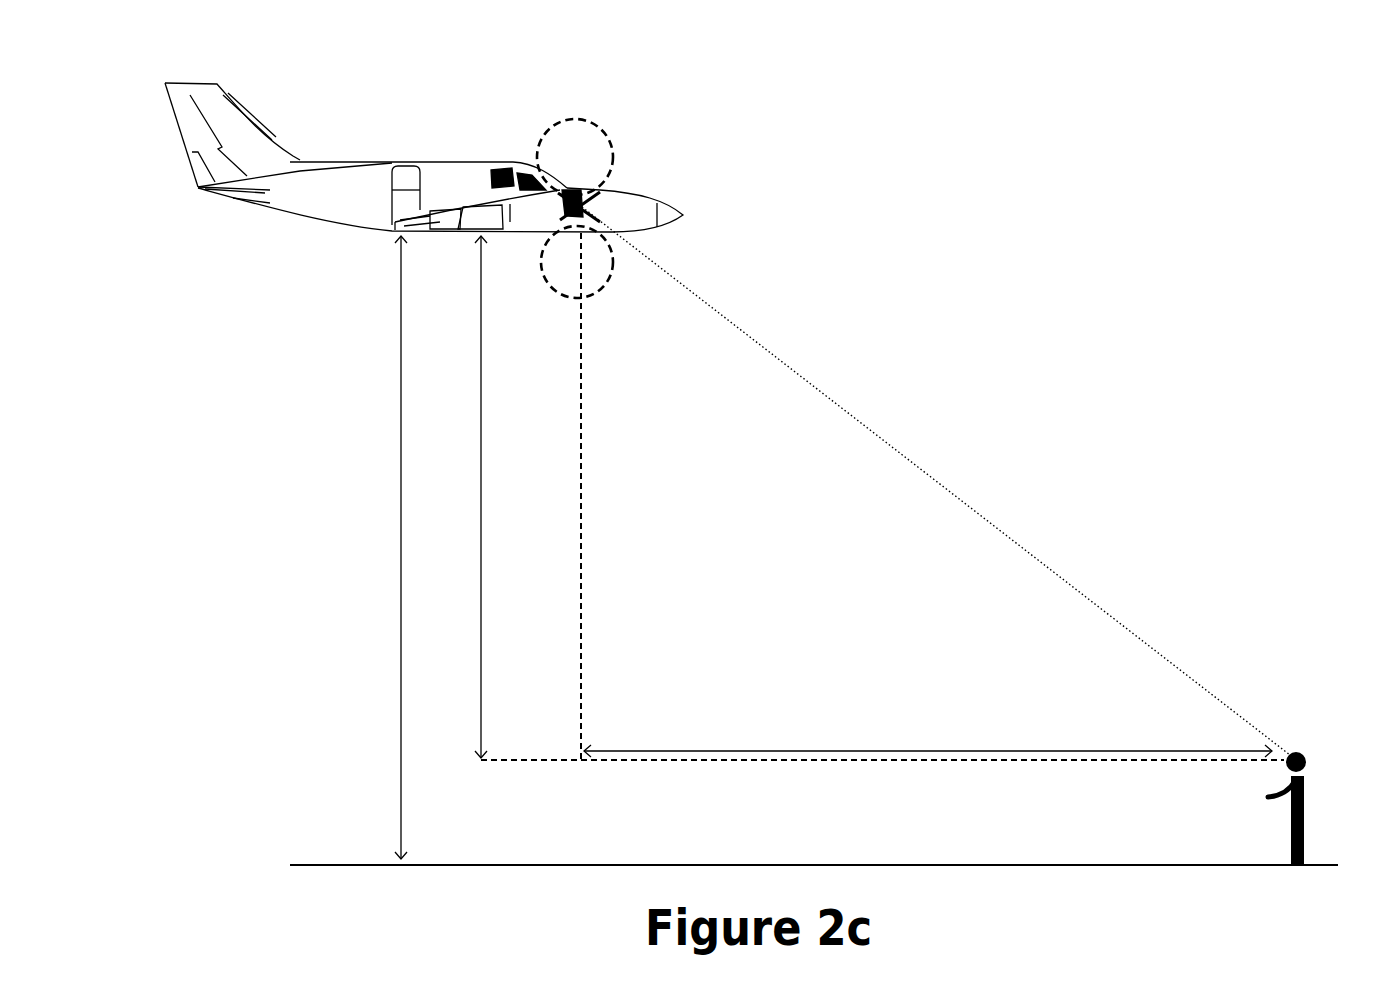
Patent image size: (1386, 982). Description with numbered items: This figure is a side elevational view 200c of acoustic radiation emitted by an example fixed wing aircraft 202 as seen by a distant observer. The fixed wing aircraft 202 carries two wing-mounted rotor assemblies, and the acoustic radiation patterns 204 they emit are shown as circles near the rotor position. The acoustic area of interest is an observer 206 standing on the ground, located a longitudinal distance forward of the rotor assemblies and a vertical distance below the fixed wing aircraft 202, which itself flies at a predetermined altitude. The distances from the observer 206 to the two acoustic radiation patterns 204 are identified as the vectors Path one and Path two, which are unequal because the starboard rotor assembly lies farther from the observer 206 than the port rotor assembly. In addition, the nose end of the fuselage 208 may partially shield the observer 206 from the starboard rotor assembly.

The side elevational view 200c is at (751, 453).
The fixed wing aircraft 202 is at (462, 118).
The acoustic radiation patterns 204 is at (577, 117).
The observer 206 is at (1267, 797).
The fuselage 208 is at (397, 162).